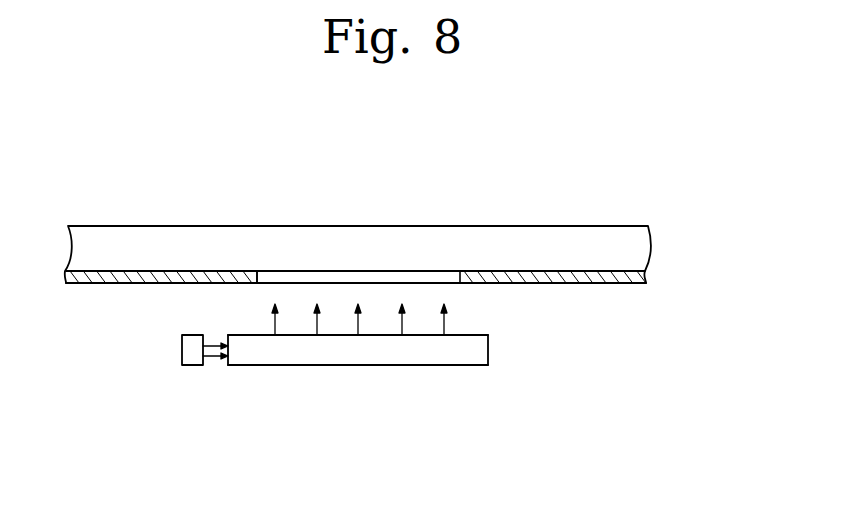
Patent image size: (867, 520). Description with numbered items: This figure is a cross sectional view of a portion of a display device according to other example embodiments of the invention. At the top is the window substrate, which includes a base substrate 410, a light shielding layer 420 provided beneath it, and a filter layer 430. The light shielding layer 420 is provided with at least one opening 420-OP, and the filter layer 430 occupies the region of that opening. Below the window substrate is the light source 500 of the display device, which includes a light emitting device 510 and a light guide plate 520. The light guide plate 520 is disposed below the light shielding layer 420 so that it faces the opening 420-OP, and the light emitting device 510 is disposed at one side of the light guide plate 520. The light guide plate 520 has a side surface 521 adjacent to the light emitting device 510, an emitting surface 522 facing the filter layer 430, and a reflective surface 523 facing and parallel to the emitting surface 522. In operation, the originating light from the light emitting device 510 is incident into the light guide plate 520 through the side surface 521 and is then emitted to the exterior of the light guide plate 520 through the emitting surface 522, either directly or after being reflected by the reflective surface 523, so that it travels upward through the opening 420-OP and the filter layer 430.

The base substrate 410 is at (638, 248).
The light shielding layer 420 is at (643, 273).
The opening 420-OP is at (259, 277).
The filter layer 430 is at (400, 275).
The light source 500 is at (370, 427).
The light emitting device 510 is at (193, 367).
The light guide plate 520 is at (340, 366).
The side surface 521 is at (228, 338).
The emitting surface 522 is at (467, 335).
The reflective surface 523 is at (455, 366).